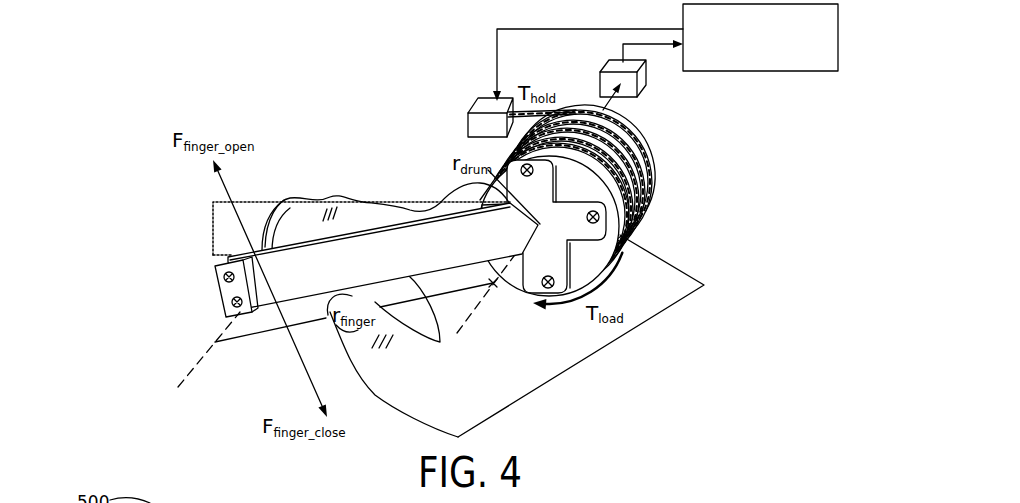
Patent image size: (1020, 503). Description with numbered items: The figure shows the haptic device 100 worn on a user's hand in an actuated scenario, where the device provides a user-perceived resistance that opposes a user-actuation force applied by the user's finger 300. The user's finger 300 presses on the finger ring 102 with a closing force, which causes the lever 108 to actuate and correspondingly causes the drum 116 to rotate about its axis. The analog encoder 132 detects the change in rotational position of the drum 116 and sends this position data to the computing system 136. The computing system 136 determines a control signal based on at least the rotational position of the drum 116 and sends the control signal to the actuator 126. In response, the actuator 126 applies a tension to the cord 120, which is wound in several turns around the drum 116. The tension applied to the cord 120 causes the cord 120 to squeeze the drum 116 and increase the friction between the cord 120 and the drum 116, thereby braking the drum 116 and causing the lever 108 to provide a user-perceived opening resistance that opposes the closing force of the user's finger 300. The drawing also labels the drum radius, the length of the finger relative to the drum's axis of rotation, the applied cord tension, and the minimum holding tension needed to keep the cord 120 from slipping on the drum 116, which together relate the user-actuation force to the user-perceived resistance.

The haptic device 100 is at (159, 99).
The finger ring 102 is at (273, 203).
The lever 108 is at (217, 290).
The drum 116 is at (594, 200).
The cord 120 is at (640, 186).
The actuator 126 is at (468, 112).
The analog encoder 132 is at (643, 75).
The computing system 136 is at (665, 52).
The user's finger 300 is at (362, 197).